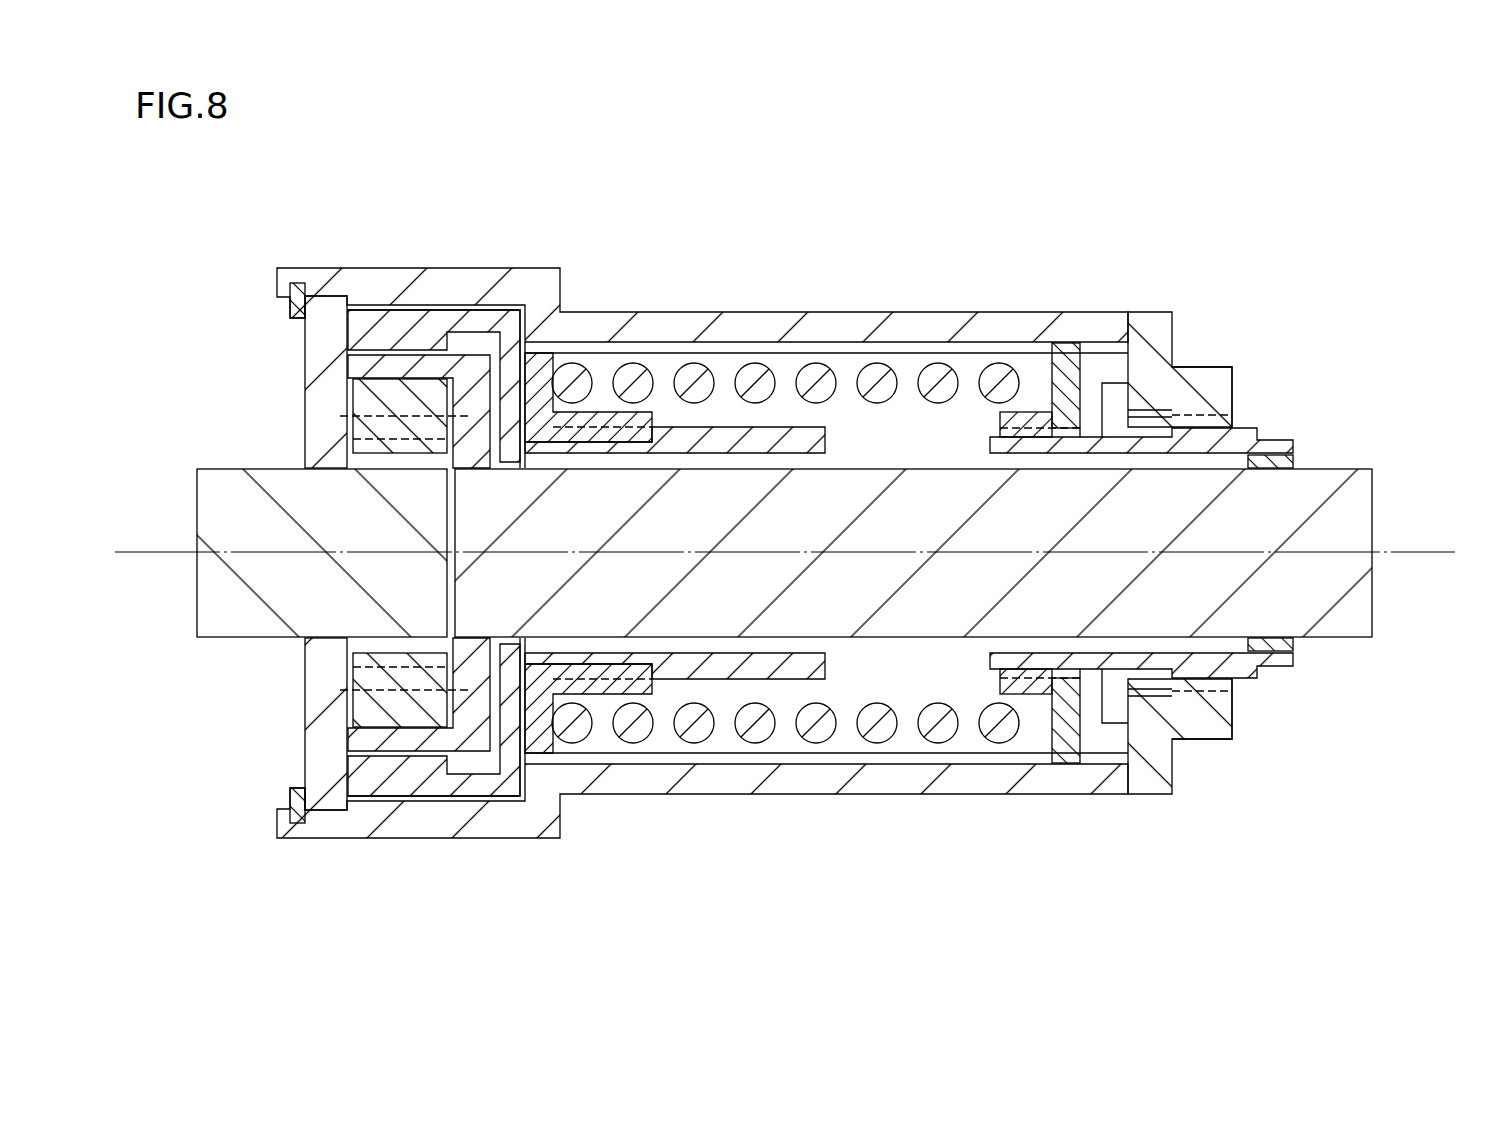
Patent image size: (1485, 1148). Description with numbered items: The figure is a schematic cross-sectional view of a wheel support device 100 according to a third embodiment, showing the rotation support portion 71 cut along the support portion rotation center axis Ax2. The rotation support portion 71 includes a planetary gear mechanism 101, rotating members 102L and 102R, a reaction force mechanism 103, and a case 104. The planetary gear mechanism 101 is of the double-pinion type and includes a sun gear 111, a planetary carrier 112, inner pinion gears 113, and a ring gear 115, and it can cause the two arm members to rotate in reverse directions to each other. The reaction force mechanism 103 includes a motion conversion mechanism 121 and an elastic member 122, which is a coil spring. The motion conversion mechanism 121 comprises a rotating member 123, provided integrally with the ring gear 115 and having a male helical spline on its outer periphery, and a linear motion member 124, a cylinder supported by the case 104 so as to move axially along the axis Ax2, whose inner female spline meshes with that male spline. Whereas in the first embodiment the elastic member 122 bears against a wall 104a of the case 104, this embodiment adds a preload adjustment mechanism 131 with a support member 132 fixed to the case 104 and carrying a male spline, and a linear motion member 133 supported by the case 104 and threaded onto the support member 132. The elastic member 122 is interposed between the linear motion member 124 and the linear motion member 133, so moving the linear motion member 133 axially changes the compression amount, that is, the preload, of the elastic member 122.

The bearing device 100 is at (1276, 178).
The planetary gear mechanism 101 is at (702, 512).
The ring gear 115 is at (395, 318).
The sun gear 111 is at (413, 383).
The planetary carrier 112 is at (470, 392).
The inner pinion gears 113 is at (362, 393).
The motion conversion mechanism 121 is at (826, 508).
The linear motion member 124 is at (600, 412).
The rotating member 123 is at (780, 427).
The reaction force mechanism 103 is at (785, 498).
The elastic member 122 is at (876, 365).
The preload adjustment mechanism 131 is at (1141, 470).
The linear motion member 133 is at (1062, 343).
The support member 132 is at (1088, 428).
The rotation support portion 71 is at (1180, 520).
The case 104 is at (1143, 300).
The wall 104a is at (1157, 343).
The rotating member 102L is at (222, 468).
The rotating member 102R is at (1325, 468).
The support portion rotation center axis Ax2 is at (1415, 551).